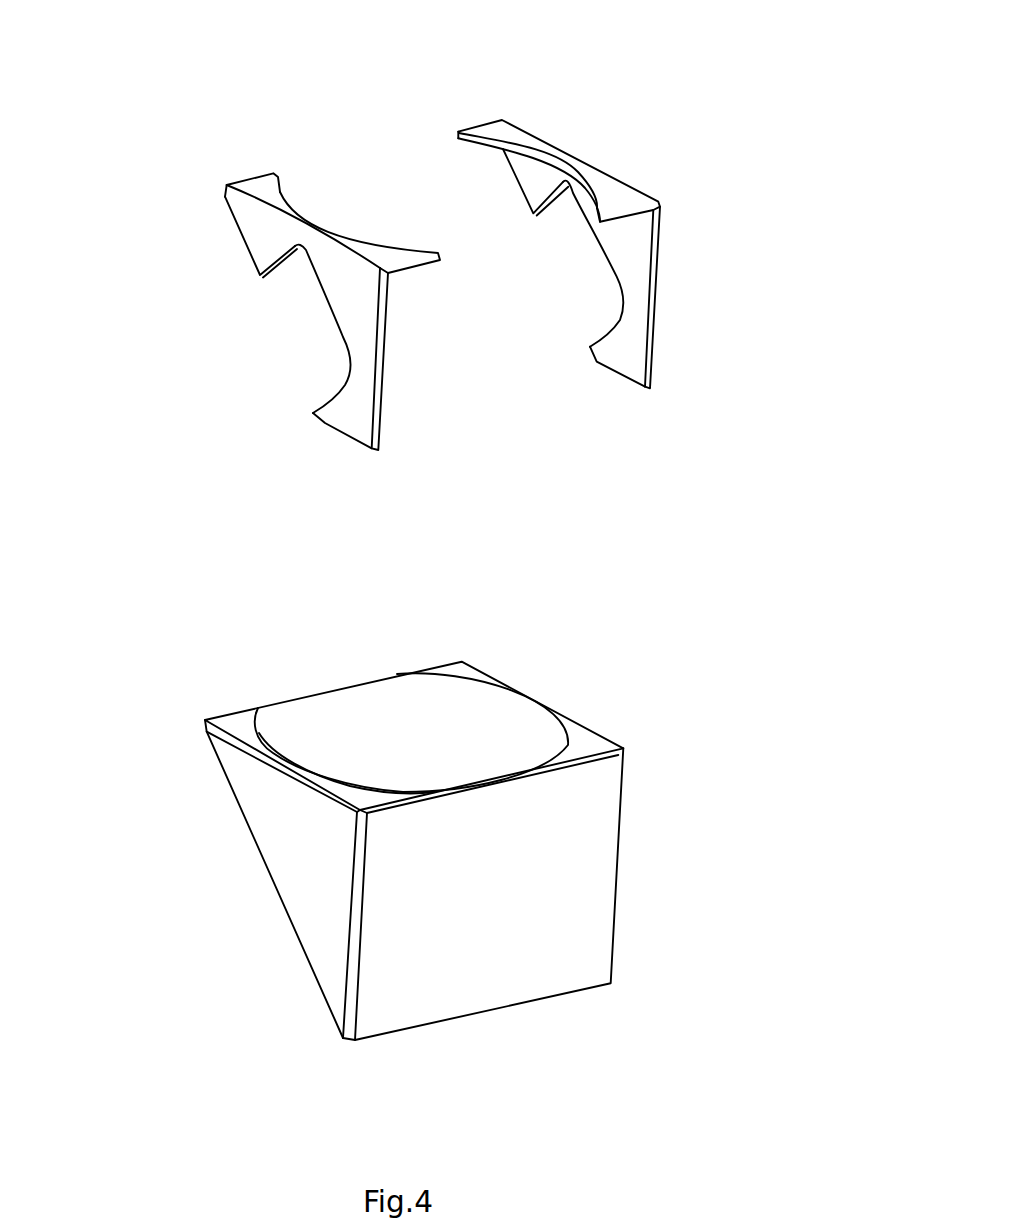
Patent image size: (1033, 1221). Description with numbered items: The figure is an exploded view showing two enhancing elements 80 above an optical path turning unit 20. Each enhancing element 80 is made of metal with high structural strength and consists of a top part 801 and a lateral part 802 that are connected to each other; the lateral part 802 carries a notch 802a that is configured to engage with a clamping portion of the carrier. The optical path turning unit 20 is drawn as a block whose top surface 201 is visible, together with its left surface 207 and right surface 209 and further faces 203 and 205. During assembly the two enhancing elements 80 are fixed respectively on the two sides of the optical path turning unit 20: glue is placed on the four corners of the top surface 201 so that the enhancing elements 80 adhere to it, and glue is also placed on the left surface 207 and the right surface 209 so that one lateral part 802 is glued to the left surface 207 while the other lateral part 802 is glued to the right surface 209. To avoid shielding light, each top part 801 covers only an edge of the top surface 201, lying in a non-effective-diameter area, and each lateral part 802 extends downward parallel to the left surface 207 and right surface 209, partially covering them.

The enhancing element 80 is at (448, 232).
The top part 801 is at (260, 182).
The lateral part 802 is at (483, 301).
The notch 802a is at (298, 322).
The optical path turning unit 20 is at (442, 794).
The top surface 201 is at (382, 723).
The bottom edge 203 is at (305, 957).
The side surface 205 is at (552, 878).
The left surface 207 is at (601, 736).
The right surface 209 is at (262, 808).